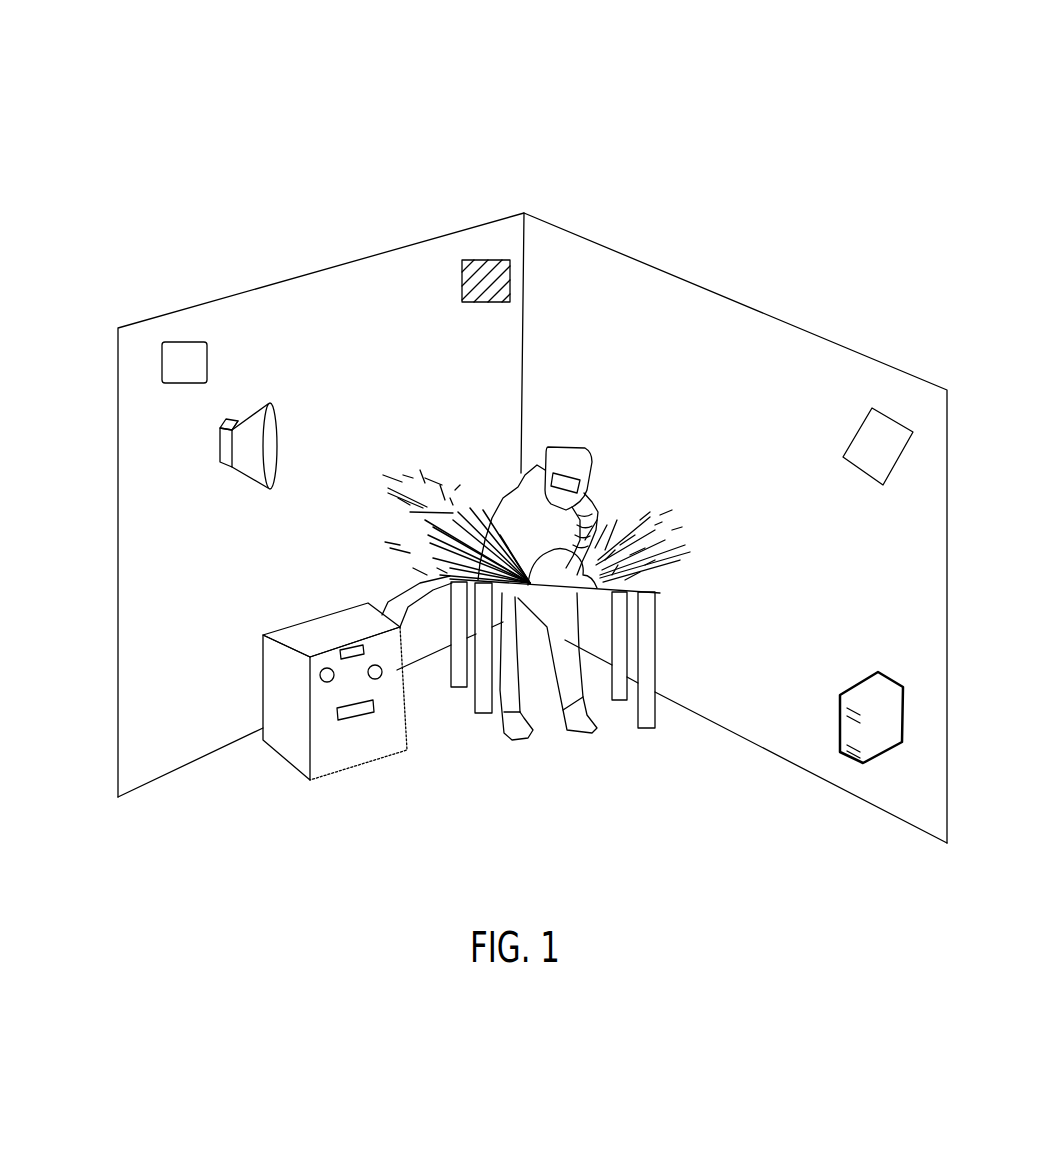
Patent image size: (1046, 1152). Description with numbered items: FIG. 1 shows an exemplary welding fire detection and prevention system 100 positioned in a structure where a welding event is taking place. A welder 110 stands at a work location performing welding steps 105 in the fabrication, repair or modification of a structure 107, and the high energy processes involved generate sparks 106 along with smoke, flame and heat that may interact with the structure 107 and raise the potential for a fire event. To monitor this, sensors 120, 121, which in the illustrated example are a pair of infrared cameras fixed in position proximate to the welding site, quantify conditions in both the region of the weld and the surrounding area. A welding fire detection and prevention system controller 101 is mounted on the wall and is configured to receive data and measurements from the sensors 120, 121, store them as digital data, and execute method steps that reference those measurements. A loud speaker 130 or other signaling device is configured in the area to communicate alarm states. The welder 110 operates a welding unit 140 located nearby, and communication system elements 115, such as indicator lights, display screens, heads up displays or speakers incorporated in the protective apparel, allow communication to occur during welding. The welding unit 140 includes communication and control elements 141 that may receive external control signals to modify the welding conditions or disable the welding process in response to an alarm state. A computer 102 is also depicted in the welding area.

The welding fire detection and prevention system 100 is at (532, 428).
The welding fire detection and prevention system controller 101 is at (432, 152).
The computer 102 is at (836, 693).
The welding steps 105 is at (749, 400).
The sparks 106 is at (670, 742).
The structure 107 is at (408, 322).
The welder 110 is at (637, 310).
The communication system elements 115 is at (639, 378).
The sensor 120 is at (900, 385).
The sensor 121 is at (125, 197).
The loud speaker 130 is at (275, 359).
The welding unit 140 is at (254, 734).
The communication and control elements 141 is at (219, 679).